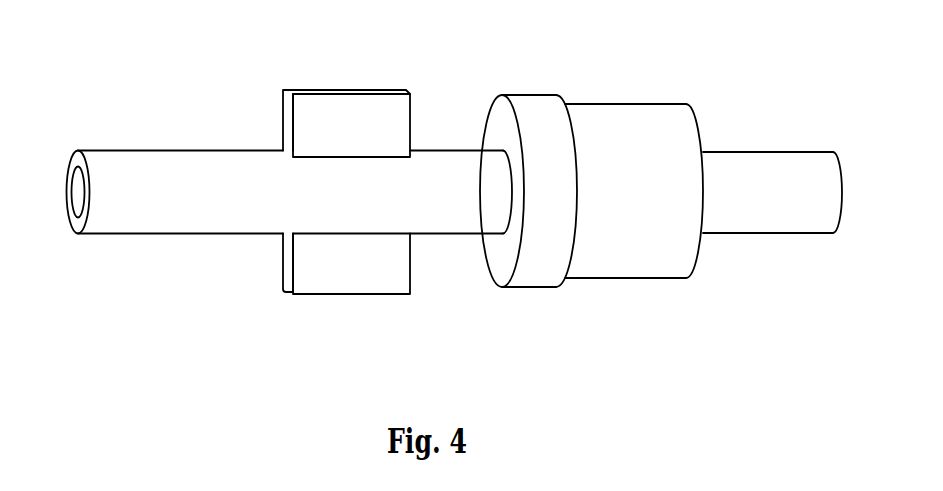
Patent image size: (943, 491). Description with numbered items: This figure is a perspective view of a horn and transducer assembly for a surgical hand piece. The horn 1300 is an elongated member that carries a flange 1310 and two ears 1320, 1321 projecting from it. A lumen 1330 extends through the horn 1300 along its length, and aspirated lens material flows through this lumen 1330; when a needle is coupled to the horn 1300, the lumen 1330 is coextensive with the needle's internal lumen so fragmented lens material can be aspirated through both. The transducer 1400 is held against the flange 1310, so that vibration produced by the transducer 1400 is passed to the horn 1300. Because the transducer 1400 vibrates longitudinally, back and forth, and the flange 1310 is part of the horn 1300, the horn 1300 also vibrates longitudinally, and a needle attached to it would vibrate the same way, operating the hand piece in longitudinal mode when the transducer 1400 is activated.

The horn 1300 is at (772, 151).
The flange 1310 is at (530, 95).
The ear 1320 is at (284, 91).
The ear 1321 is at (289, 294).
The lumen 1330 is at (68, 191).
The transducer 1400 is at (623, 150).